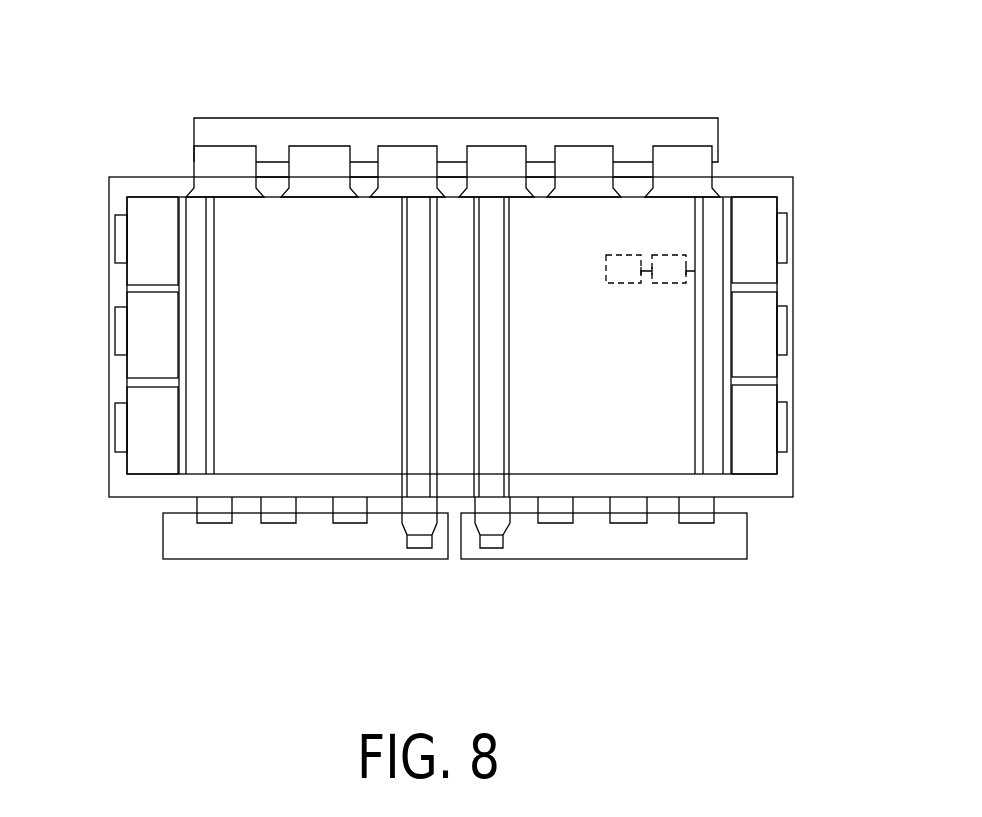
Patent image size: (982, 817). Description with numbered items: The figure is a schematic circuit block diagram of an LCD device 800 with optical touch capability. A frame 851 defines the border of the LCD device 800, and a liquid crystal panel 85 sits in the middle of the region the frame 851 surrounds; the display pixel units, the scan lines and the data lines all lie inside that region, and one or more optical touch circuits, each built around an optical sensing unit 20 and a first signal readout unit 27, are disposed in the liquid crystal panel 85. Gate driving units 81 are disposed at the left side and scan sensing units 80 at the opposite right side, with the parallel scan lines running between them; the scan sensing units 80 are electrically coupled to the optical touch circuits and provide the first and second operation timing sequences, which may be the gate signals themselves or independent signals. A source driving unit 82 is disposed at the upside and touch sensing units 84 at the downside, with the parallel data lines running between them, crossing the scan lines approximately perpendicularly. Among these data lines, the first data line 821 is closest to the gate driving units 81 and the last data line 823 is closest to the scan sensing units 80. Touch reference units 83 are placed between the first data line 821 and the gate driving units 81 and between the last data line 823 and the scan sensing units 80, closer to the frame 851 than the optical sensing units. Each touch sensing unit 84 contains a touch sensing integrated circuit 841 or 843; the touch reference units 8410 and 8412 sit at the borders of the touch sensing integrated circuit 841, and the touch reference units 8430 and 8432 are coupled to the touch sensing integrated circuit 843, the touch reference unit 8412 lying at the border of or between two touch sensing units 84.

The LCD device 800 is at (96, 43).
The frame 851 is at (142, 177).
The liquid crystal panel 85 is at (333, 210).
The source driving unit 82 is at (551, 130).
The first data line 821 is at (215, 227).
The last data line 823 is at (695, 228).
The gate driving unit 81 is at (122, 238).
The touch reference unit 83 is at (195, 335).
The scan sensing unit 80 is at (785, 238).
The touch reference unit 8412 is at (403, 362).
The touch reference unit 8410 is at (428, 433).
The touch sensing integrated circuit 841 is at (417, 542).
The touch reference unit 8432 is at (475, 217).
The touch reference unit 8430 is at (508, 453).
The touch sensing integrated circuit 843 is at (490, 545).
The touch sensing unit 84 is at (250, 550).
The optical sensing unit 20 is at (617, 285).
The first signal readout unit 27 is at (662, 285).